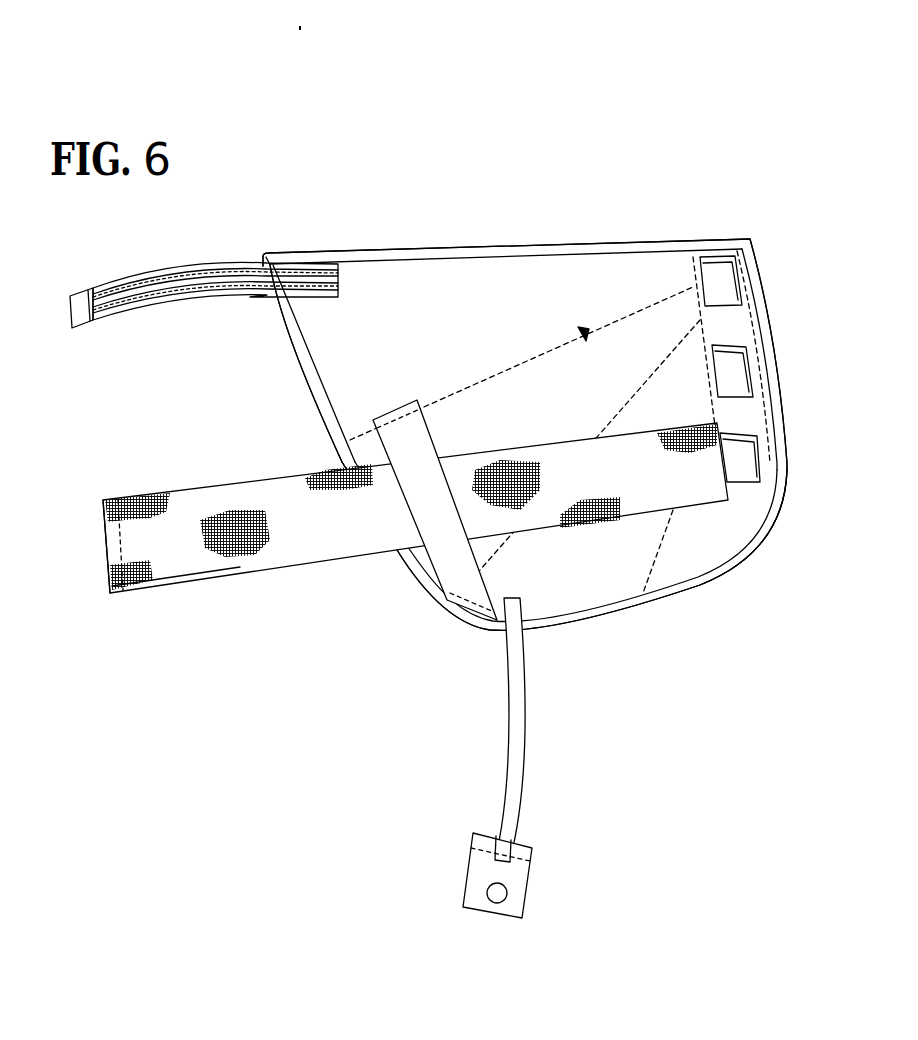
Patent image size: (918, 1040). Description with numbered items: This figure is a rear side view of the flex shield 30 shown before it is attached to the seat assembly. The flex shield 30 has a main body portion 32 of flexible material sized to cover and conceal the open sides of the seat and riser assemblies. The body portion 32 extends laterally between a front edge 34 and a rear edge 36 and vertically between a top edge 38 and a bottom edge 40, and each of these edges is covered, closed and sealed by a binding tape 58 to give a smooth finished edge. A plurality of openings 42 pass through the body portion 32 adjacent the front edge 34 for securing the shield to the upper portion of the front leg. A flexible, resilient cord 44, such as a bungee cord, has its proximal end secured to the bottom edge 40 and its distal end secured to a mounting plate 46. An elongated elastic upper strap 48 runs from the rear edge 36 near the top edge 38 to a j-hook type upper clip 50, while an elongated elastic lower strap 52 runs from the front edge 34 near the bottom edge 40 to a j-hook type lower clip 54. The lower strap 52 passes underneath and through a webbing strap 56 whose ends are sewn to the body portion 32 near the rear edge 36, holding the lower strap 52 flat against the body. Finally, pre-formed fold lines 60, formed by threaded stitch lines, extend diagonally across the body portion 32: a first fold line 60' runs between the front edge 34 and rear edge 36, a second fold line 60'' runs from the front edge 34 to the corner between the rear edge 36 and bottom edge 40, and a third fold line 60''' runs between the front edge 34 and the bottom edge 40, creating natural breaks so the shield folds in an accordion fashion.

The flex shield 30 is at (674, 86).
The main body portion 32 is at (472, 278).
The front edge 34 is at (782, 412).
The rear edge 36 is at (293, 373).
The top edge 38 is at (603, 241).
The bottom edge 40 is at (673, 600).
The openings 42 is at (733, 277).
The cord 44 is at (520, 745).
The mounting plate 46 is at (523, 886).
The upper strap 48 is at (172, 270).
The upper clip 50 is at (73, 291).
The lower strap 52 is at (300, 552).
The lower clip 54 is at (188, 588).
The webbing strap 56 is at (425, 447).
The binding tape 58 is at (762, 545).
The fold lines 60 is at (559, 314).
The first fold line 60' is at (521, 363).
The second fold line 60'' is at (590, 445).
The third fold line 60''' is at (629, 551).